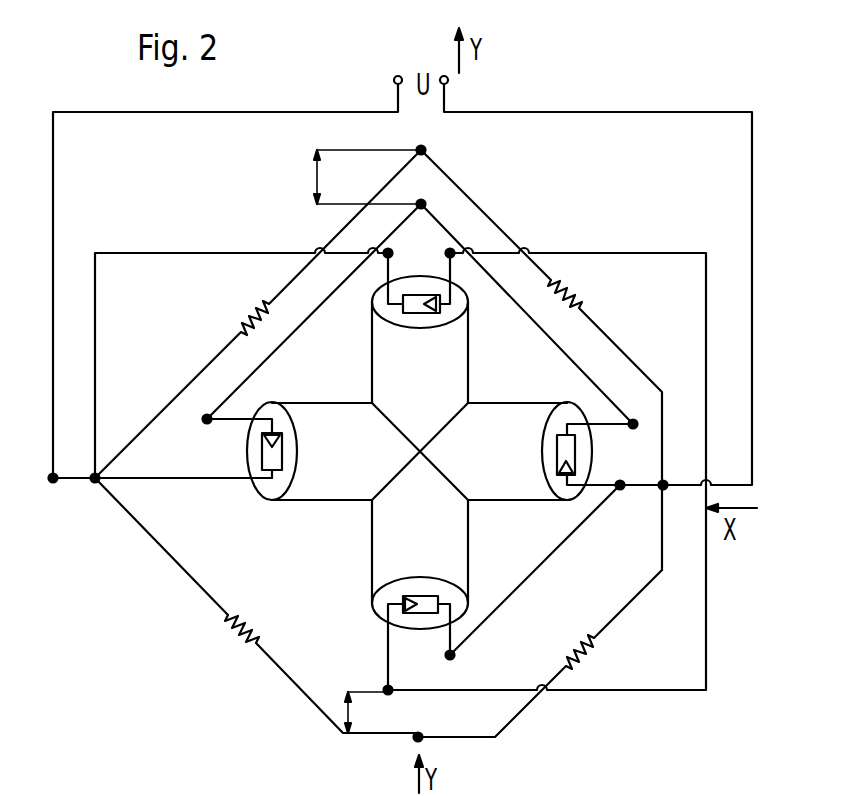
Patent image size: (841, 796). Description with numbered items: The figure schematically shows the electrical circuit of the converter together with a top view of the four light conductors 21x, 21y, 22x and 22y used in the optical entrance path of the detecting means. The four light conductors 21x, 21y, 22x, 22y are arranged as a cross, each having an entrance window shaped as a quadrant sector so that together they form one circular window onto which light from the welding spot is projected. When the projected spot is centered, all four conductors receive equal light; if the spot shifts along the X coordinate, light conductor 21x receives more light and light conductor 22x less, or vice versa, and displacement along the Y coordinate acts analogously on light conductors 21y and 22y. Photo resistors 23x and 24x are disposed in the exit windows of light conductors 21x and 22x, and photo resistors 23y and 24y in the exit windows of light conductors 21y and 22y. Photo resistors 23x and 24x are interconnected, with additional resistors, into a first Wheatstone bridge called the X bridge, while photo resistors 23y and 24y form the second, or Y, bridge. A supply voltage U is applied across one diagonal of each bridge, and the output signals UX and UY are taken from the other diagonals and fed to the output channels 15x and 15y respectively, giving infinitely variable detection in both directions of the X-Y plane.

The output channel 15x is at (362, 172).
The output channel 15y is at (355, 735).
The light conductor 21x is at (353, 380).
The light conductor 21y is at (437, 358).
The light conductor 22x is at (524, 420).
The light conductor 22y is at (445, 549).
The photo resistor 23x is at (262, 450).
The photo resistor 23y is at (423, 292).
The photo resistor 24x is at (575, 452).
The photo resistor 24y is at (423, 615).